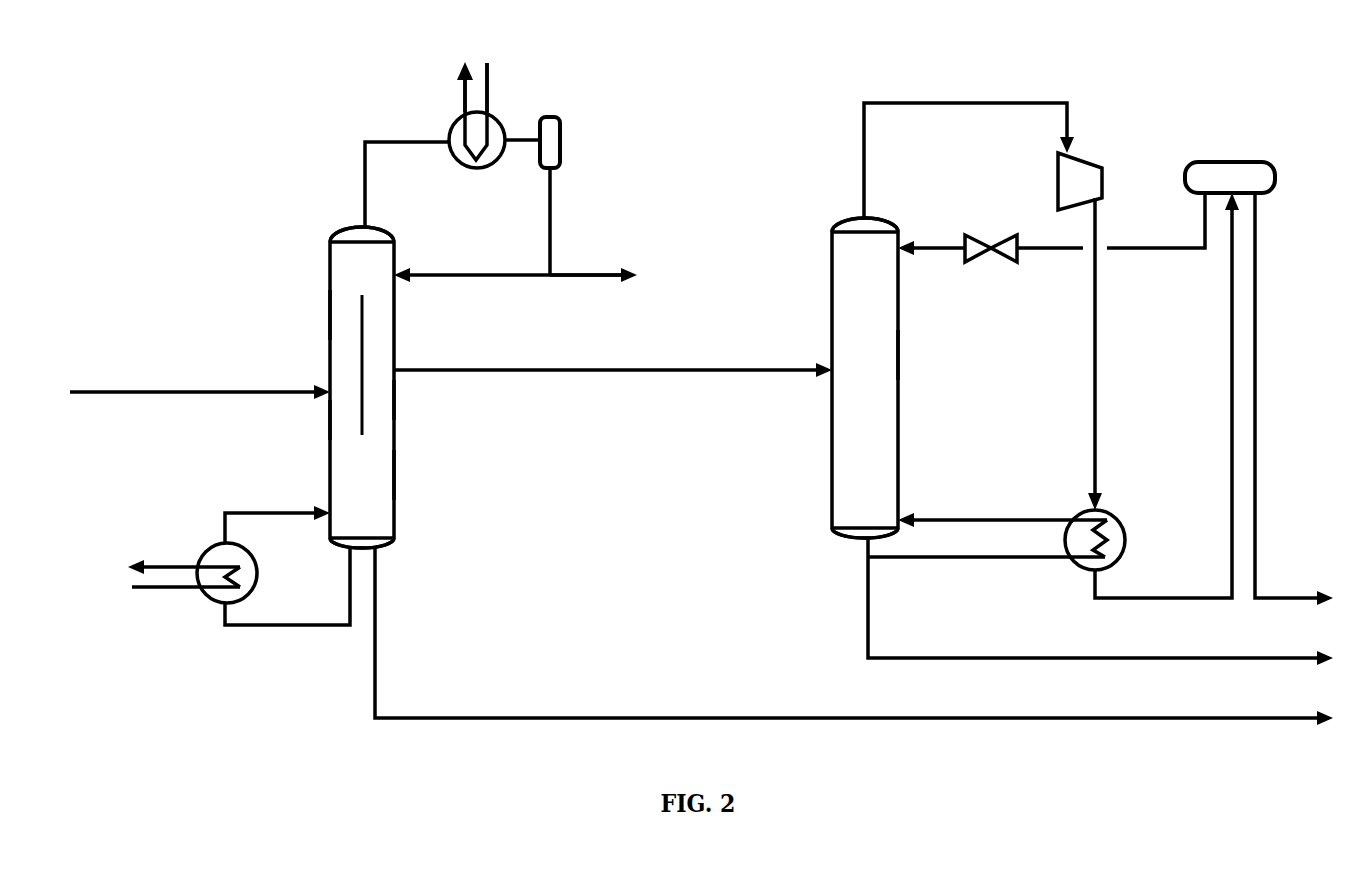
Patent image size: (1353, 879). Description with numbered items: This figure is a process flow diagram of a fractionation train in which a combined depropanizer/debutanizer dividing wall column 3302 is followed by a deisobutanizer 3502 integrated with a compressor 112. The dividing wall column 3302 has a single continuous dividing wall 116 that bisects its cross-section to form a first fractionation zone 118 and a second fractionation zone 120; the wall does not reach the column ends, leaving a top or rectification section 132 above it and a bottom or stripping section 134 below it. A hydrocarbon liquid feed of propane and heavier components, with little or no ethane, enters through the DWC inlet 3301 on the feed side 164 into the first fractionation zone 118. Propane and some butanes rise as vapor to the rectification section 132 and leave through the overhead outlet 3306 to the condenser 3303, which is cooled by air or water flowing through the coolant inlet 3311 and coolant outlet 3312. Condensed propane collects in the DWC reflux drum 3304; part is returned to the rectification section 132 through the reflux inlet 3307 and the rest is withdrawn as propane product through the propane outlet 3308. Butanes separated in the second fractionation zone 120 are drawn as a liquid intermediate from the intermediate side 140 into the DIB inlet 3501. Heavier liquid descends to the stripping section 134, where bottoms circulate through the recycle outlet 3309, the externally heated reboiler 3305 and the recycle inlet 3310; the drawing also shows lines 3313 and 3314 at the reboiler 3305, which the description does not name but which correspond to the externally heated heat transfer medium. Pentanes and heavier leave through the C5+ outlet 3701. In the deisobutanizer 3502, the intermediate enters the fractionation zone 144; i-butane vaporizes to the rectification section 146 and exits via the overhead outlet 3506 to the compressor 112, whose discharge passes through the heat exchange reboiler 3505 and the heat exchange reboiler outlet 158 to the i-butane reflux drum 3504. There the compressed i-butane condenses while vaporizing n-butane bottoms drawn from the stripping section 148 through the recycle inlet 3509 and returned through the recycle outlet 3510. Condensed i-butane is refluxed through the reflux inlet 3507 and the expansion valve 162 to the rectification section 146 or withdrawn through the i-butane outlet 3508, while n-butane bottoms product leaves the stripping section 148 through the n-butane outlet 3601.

The depropanizer/debutanizer dividing wall column 3302 is at (328, 253).
The top or rectification section 132 is at (367, 233).
The first fractionation zone 118 is at (345, 325).
The dividing wall 116 is at (363, 372).
The second fractionation zone 120 is at (383, 393).
The feed side 164 is at (328, 423).
The intermediate side 140 is at (400, 470).
The bottom or stripping section 134 is at (387, 548).
The DWC inlet 3301 is at (183, 388).
The overhead outlet 3306 is at (368, 138).
The condenser 3303 is at (450, 120).
The coolant outlet 3312 is at (455, 80).
The coolant inlet 3311 is at (490, 80).
The DWC reflux drum 3304 is at (548, 117).
The reflux inlet 3307 is at (465, 272).
The propane outlet 3308 is at (612, 272).
The recycle inlet 3310 is at (255, 512).
The externally heated reboiler 3305 is at (202, 552).
The heating medium outlet 3314 is at (158, 562).
The heating medium inlet 3313 is at (183, 588).
The recycle outlet 3309 is at (317, 623).
The C5+ outlet 3701 is at (797, 716).
The DIB inlet 3501 is at (678, 370).
The deisobutanizer 3502 is at (830, 253).
The top or rectification section 146 is at (872, 220).
The fractionation zone 144 is at (870, 372).
The bottom or stripping section 148 is at (853, 542).
The overhead outlet 3506 is at (863, 127).
The compressor 112 is at (1057, 195).
The expansion valve 162 is at (1002, 252).
The heat exchange reboiler outlet 158 is at (1098, 367).
The i-butane reflux drum 3504 is at (1237, 158).
The reflux inlet 3507 is at (1202, 228).
The i-butane outlet 3508 is at (1257, 368).
The recycle outlet 3510 is at (992, 518).
The heat exchange reboiler 3505 is at (1075, 520).
The recycle inlet 3509 is at (993, 558).
The n-butane outlet 3601 is at (1062, 653).